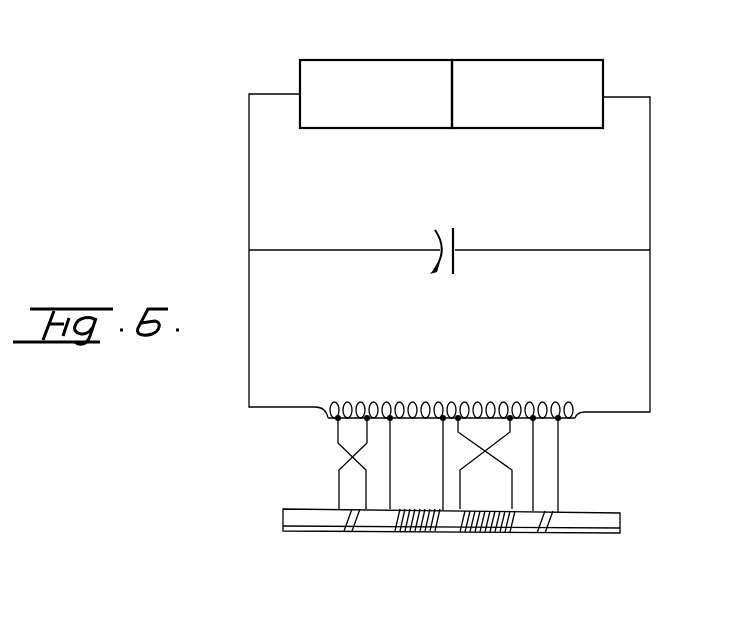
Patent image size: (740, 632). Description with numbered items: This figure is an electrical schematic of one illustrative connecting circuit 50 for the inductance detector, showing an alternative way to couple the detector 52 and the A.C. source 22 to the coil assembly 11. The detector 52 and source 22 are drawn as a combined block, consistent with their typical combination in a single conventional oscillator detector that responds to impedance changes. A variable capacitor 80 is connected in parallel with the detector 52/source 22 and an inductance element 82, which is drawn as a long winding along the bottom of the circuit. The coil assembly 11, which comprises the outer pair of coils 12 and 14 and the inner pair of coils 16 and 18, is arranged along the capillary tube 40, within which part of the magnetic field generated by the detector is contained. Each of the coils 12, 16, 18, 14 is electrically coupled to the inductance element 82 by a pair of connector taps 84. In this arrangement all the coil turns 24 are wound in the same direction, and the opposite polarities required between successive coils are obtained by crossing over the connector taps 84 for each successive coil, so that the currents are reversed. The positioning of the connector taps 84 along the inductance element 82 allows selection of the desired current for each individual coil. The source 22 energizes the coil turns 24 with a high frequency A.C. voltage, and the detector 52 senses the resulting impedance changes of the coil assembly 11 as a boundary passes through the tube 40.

The detector 52 is at (401, 60).
The voltage source 22 is at (557, 60).
The variable capacitor 80 is at (448, 275).
The inductance element 82 is at (452, 404).
The connector taps 84 is at (392, 421).
The connecting circuit 50 is at (646, 427).
The coil 14 is at (338, 490).
The coil 16 is at (500, 510).
The coil 18 is at (428, 509).
The coil turns 24 is at (353, 533).
The coil 12 is at (544, 535).
The coil assembly 11 is at (519, 549).
The capillary tube 40 is at (620, 527).